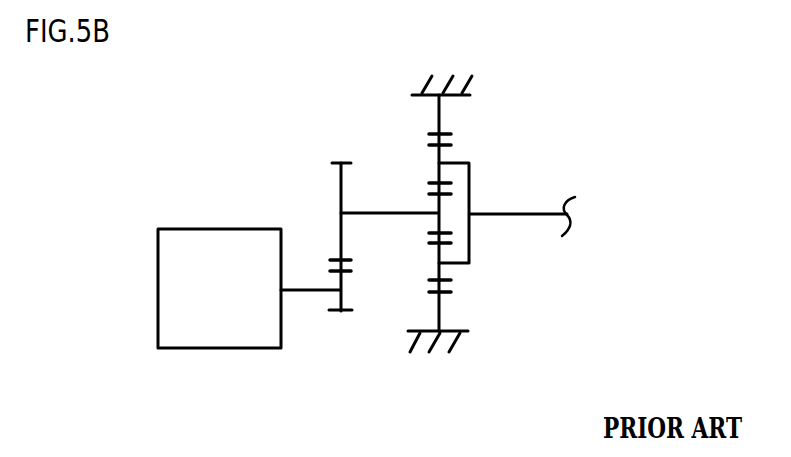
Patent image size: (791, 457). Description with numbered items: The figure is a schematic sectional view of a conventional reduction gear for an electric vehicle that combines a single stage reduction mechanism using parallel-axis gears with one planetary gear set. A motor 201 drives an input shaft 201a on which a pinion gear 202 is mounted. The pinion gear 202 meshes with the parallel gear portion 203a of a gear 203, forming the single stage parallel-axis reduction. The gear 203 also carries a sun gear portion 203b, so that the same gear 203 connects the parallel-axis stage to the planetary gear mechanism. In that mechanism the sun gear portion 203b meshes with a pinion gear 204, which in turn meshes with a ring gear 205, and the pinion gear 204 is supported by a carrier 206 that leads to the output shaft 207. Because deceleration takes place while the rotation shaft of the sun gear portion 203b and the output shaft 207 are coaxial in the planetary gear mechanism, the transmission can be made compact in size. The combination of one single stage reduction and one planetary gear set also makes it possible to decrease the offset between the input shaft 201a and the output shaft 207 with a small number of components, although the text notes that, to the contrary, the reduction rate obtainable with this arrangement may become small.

The motor 201 is at (203, 229).
The input shaft 201a is at (309, 291).
The pinion gear 202 is at (336, 282).
The gear 203 is at (383, 212).
The parallel gear portion 203a is at (340, 181).
The sun gear portion 203b is at (437, 223).
The pinion gear 204 is at (442, 153).
The ring gear 205 is at (442, 113).
The carrier 206 is at (470, 190).
The output shaft 207 is at (531, 216).